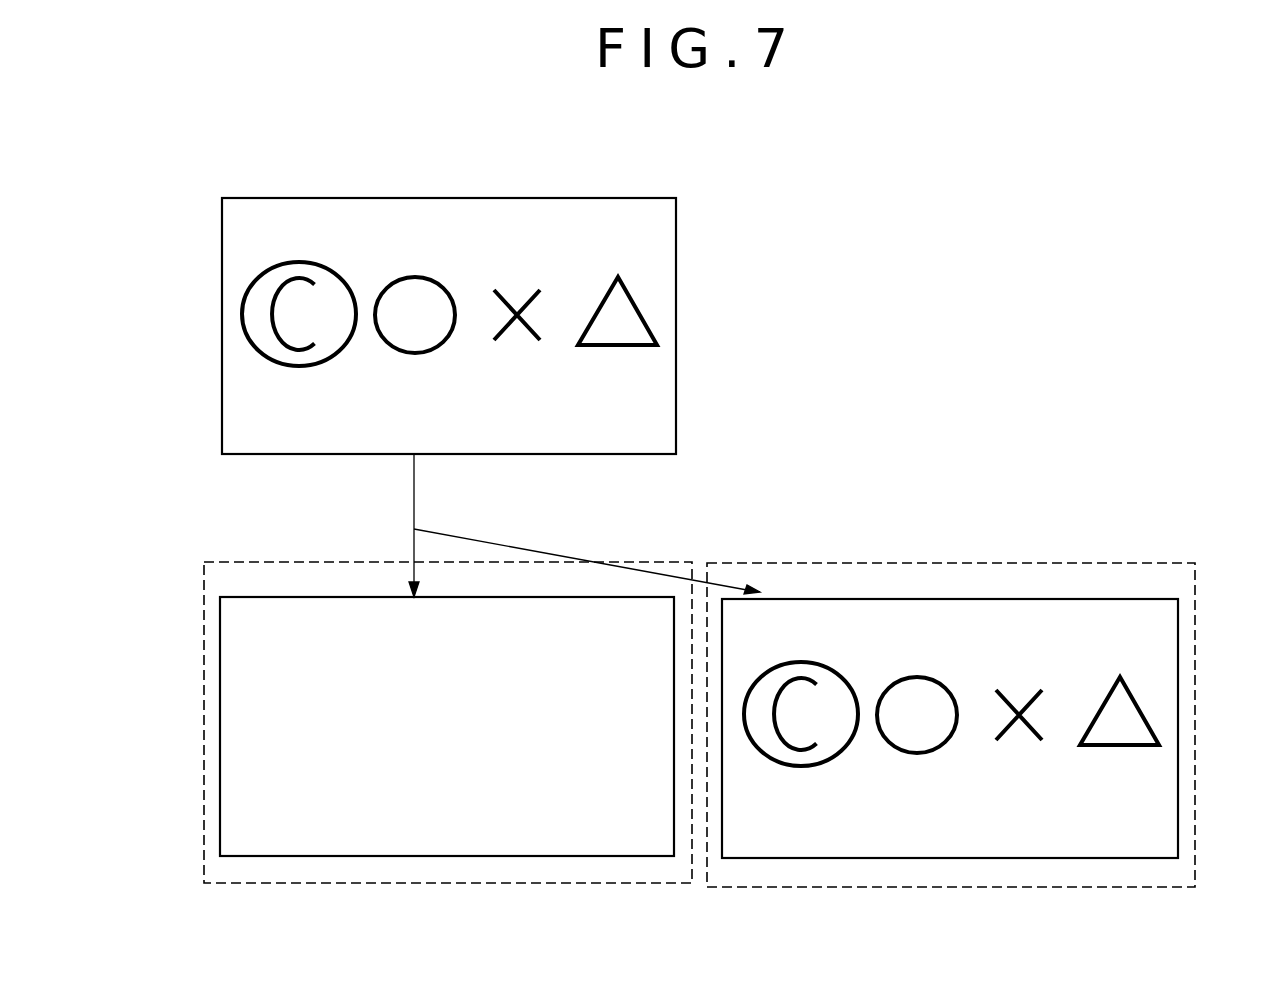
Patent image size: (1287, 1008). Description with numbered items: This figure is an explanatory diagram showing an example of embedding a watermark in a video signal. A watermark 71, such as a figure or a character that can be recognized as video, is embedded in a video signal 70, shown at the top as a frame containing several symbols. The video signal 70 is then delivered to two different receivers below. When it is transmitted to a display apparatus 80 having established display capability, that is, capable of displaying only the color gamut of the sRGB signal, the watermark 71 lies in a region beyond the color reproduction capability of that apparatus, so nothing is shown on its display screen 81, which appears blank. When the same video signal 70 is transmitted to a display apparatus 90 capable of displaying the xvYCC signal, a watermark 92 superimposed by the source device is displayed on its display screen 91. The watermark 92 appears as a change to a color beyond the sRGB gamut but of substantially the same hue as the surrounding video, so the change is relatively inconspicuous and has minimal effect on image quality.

The video signal 70 is at (220, 259).
The watermark 71 is at (343, 277).
The display apparatus 80 is at (202, 789).
The display screen 81 is at (220, 655).
The display apparatus 90 is at (1195, 793).
The display screen 91 is at (1178, 657).
The watermark 92 is at (845, 677).